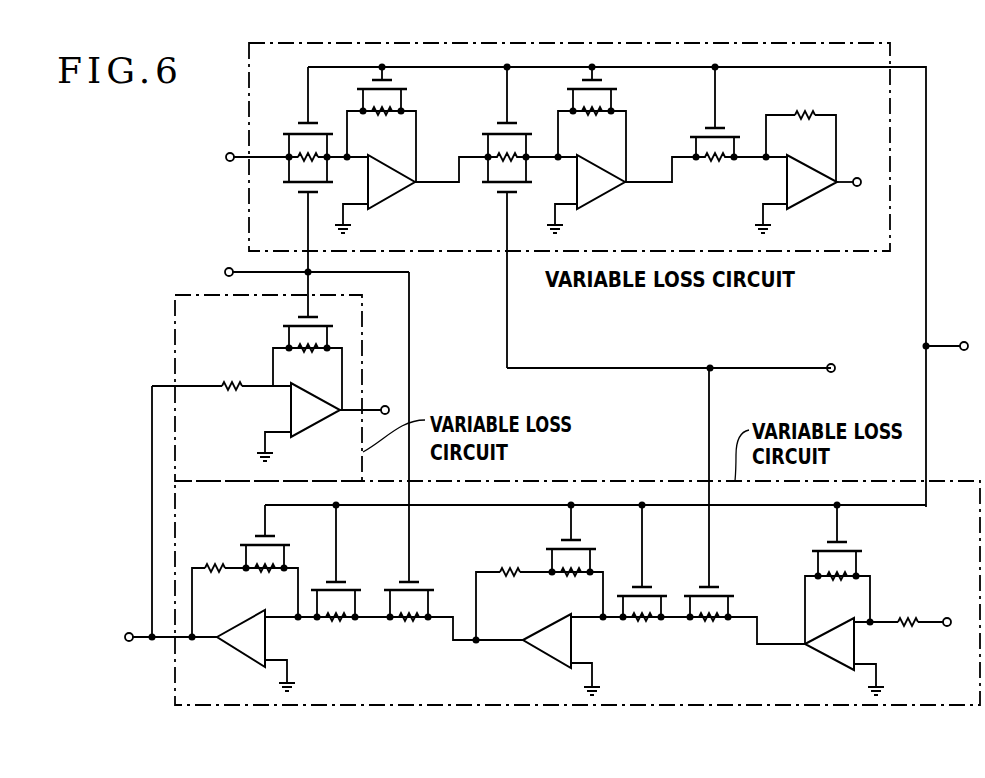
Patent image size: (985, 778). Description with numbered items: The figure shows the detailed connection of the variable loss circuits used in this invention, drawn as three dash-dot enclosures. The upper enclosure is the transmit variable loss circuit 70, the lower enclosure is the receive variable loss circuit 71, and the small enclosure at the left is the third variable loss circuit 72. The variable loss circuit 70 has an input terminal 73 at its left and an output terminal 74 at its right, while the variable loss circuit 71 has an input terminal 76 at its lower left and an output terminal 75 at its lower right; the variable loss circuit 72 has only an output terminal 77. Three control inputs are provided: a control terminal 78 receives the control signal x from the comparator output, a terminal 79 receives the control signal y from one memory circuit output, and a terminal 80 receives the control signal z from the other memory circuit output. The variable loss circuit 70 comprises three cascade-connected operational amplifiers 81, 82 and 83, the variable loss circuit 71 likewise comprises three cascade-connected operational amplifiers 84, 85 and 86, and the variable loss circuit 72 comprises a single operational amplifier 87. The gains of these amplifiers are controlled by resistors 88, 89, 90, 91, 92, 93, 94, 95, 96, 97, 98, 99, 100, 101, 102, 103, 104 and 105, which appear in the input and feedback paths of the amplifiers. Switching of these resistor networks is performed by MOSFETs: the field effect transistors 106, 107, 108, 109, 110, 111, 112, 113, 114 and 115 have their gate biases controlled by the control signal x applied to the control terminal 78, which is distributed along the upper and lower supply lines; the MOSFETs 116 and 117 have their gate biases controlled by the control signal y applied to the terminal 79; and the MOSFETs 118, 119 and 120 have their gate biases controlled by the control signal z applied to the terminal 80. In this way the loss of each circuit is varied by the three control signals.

The variable loss circuit L_T 70 is at (889, 253).
The variable loss circuit L_R 71 is at (949, 481).
The variable loss circuit 1_R 72 is at (175, 330).
The input terminal 73 is at (227, 152).
The output terminal 74 is at (861, 177).
The output terminal 75 is at (951, 617).
The input terminal 76 is at (130, 643).
The output terminal 77 is at (385, 405).
The control terminal 78 is at (960, 340).
The terminal 79 is at (832, 361).
The terminal 80 is at (228, 266).
The operational amplifier 81 is at (391, 182).
The operational amplifier 82 is at (601, 182).
The operational amplifier 83 is at (812, 182).
The operational amplifier 84 is at (829, 644).
The operational amplifier 85 is at (547, 641).
The operational amplifier 86 is at (241, 638).
The operational amplifier 87 is at (315, 410).
The resistor 88 is at (300, 158).
The resistor 89 is at (382, 114).
The resistor 90 is at (513, 160).
The resistor 91 is at (590, 114).
The resistor 92 is at (710, 162).
The resistor 93 is at (796, 122).
The resistor 94 is at (902, 629).
The resistor 95 is at (837, 592).
The resistor 96 is at (701, 627).
The resistor 97 is at (631, 627).
The resistor 98 is at (564, 574).
The resistor 99 is at (522, 576).
The resistor 100 is at (399, 618).
The resistor 101 is at (329, 618).
The resistor 102 is at (264, 572).
The resistor 103 is at (215, 572).
The resistor 104 is at (226, 391).
The resistor 105 is at (299, 352).
The field effect transistor 106 is at (319, 125).
The field effect transistor 107 is at (396, 80).
The field effect transistor 108 is at (515, 123).
The field effect transistor 109 is at (604, 82).
The field effect transistor 110 is at (726, 124).
The field effect transistor 111 is at (853, 546).
The field effect transistor 112 is at (652, 585).
The field effect transistor 113 is at (582, 542).
The field effect transistor 114 is at (347, 585).
The field effect transistor 115 is at (276, 539).
The field effect transistor 116 is at (524, 191).
The field effect transistor 117 is at (719, 585).
The field effect transistor 118 is at (321, 191).
The field effect transistor 119 is at (415, 585).
The field effect transistor 120 is at (318, 318).